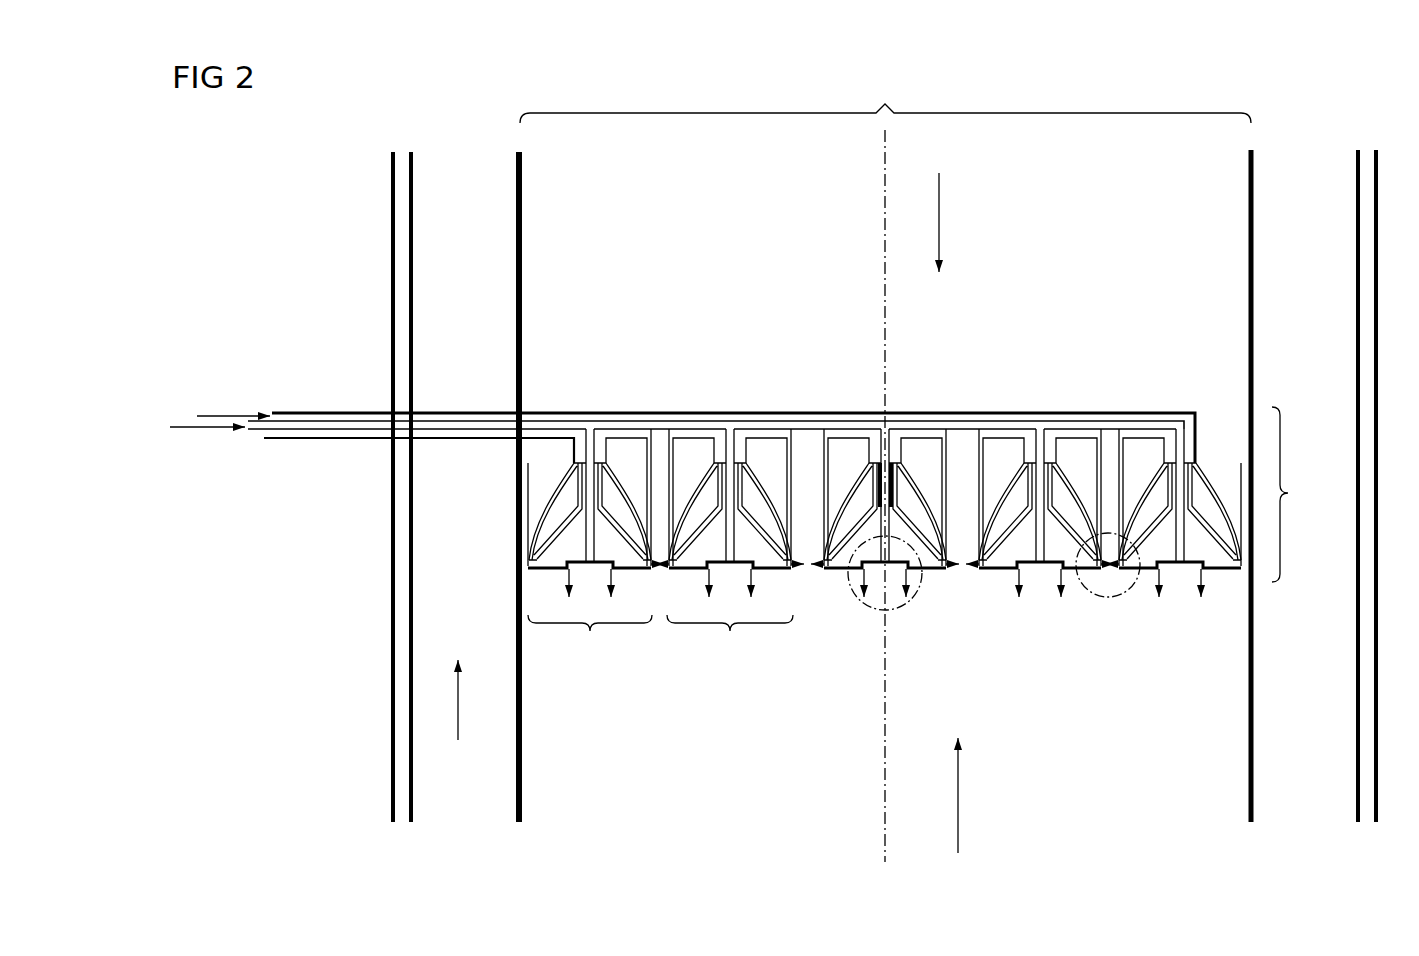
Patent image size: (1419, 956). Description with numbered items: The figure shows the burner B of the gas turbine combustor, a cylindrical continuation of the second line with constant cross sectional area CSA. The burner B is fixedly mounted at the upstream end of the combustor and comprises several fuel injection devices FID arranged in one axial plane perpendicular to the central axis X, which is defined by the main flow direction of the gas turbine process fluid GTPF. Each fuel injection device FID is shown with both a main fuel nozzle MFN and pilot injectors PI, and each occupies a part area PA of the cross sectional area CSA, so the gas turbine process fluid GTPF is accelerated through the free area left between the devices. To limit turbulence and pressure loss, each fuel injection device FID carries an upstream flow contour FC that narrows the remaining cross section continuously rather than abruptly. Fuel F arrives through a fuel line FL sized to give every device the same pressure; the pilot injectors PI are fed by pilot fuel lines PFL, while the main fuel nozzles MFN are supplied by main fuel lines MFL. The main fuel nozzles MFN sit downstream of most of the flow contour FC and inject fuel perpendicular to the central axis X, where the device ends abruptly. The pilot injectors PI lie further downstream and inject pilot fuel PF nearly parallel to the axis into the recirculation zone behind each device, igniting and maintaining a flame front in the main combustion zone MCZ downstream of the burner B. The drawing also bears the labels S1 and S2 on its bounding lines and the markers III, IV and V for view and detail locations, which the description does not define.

The fuel F is at (218, 412).
The fuel line FL is at (308, 411).
The pilot fuel line PFL is at (356, 428).
The main fuel line MFL is at (333, 440).
The first wall / shell S1 is at (517, 588).
The second wall / shell S2 is at (392, 594).
The cross sectional area CSA is at (885, 97).
The central axis X is at (883, 200).
The gas turbine process fluid GTPF is at (941, 206).
The flow contour FC is at (626, 486).
The main fuel nozzle MFN is at (803, 560).
The fuel injection device FID is at (920, 504).
The burner B is at (1289, 494).
The pilot fuel PF is at (706, 578).
The pilot injector PI is at (752, 578).
The part area PA is at (660, 642).
The detail V is at (903, 608).
The detail IV is at (1112, 597).
The view direction III is at (978, 795).
The main combustion zone MCZ is at (847, 810).